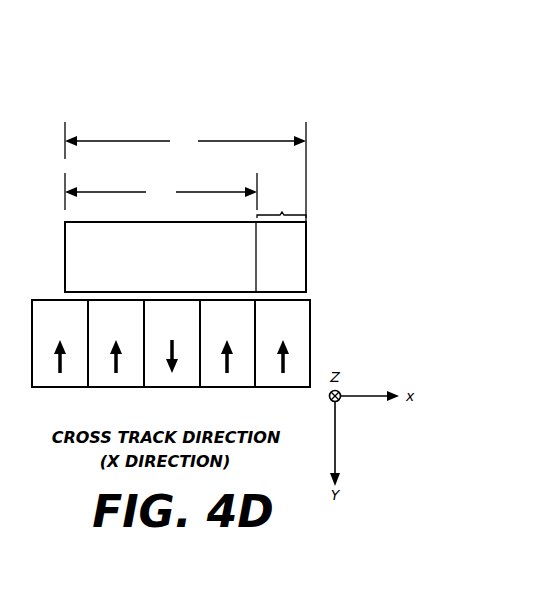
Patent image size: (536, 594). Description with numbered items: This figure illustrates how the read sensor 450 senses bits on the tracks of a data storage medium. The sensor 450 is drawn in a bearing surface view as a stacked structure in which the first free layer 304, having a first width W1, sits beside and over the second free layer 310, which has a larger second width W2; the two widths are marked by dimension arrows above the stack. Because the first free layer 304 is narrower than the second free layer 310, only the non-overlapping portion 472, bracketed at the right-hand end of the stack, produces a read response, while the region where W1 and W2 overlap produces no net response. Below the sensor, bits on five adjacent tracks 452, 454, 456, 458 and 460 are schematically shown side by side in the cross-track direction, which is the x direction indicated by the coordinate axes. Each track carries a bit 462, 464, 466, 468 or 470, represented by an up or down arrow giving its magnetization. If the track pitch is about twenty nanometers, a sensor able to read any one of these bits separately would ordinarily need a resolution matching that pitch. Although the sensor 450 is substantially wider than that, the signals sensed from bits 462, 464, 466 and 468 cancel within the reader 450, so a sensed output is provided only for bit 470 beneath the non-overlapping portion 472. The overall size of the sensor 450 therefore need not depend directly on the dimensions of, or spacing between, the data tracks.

The sensor 450 is at (296, 88).
The first free layer 304 is at (209, 249).
The second free layer 310 is at (268, 249).
The non-overlapping portion 472 is at (281, 204).
The track 452 is at (45, 322).
The track 454 is at (101, 322).
The track 456 is at (157, 322).
The track 458 is at (213, 322).
The track 460 is at (268, 322).
The bit 462 is at (59, 369).
The bit 464 is at (115, 369).
The bit 466 is at (170, 369).
The bit 468 is at (226, 369).
The bit 470 is at (282, 369).